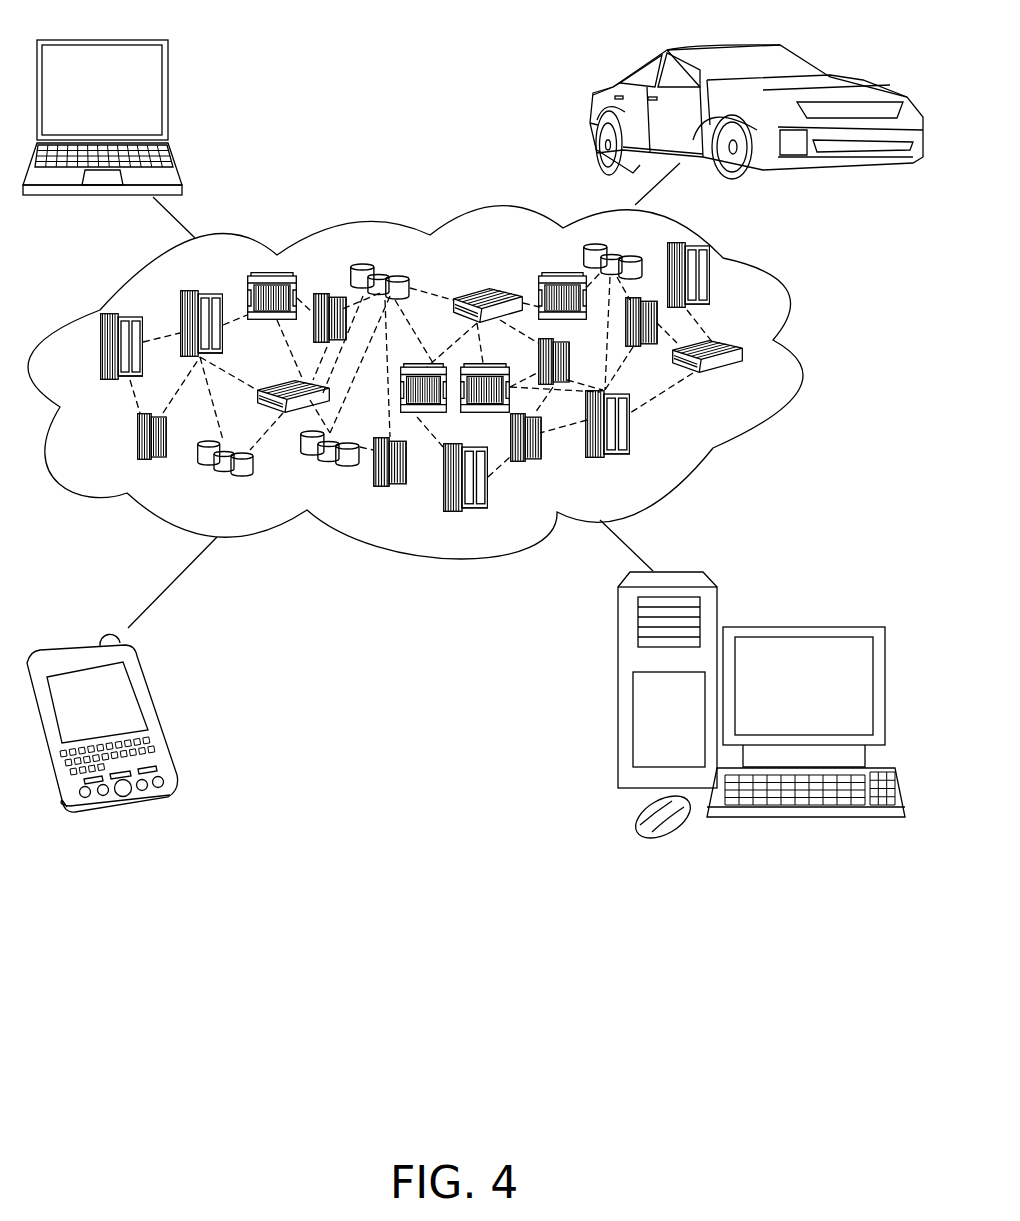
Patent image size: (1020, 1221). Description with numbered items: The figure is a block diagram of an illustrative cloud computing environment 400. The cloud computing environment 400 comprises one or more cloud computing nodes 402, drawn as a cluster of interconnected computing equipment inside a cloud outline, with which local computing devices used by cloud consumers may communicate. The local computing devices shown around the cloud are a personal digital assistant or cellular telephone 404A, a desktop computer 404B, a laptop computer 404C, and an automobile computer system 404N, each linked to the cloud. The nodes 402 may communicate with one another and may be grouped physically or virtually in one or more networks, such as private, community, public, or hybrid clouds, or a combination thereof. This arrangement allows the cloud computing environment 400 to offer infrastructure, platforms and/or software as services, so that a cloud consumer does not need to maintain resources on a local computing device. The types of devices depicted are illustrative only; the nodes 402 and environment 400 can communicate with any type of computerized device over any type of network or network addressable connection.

The cloud computing environment 400 is at (752, 352).
The cloud computing nodes 402 is at (743, 381).
The personal digital assistant (PDA) or cellular telephone 404A is at (148, 682).
The desktop computer 404B is at (790, 623).
The laptop computer 404C is at (168, 73).
The automobile computer system 404N is at (590, 118).